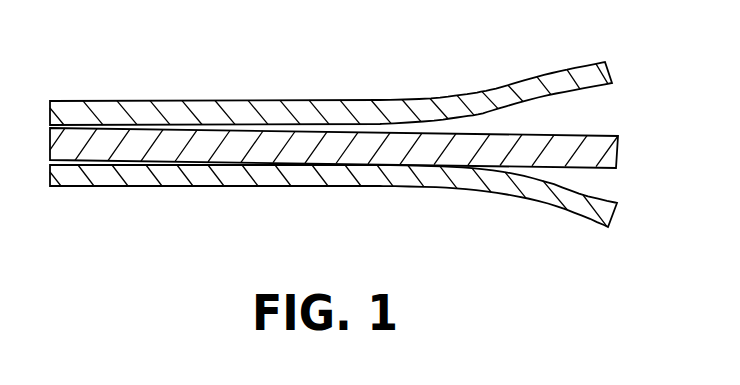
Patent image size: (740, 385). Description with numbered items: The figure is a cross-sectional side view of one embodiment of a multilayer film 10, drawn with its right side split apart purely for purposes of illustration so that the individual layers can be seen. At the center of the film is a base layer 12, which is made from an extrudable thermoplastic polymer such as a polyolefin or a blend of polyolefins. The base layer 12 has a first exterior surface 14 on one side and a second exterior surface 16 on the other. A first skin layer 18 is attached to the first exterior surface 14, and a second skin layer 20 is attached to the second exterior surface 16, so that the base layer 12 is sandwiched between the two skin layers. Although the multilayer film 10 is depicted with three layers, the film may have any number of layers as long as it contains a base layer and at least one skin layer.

The multilayer film 10 is at (160, 79).
The base layer 12 is at (620, 152).
The first exterior surface 14 is at (588, 134).
The second exterior surface 16 is at (602, 168).
The first skin layer 18 is at (612, 70).
The second skin layer 20 is at (618, 215).